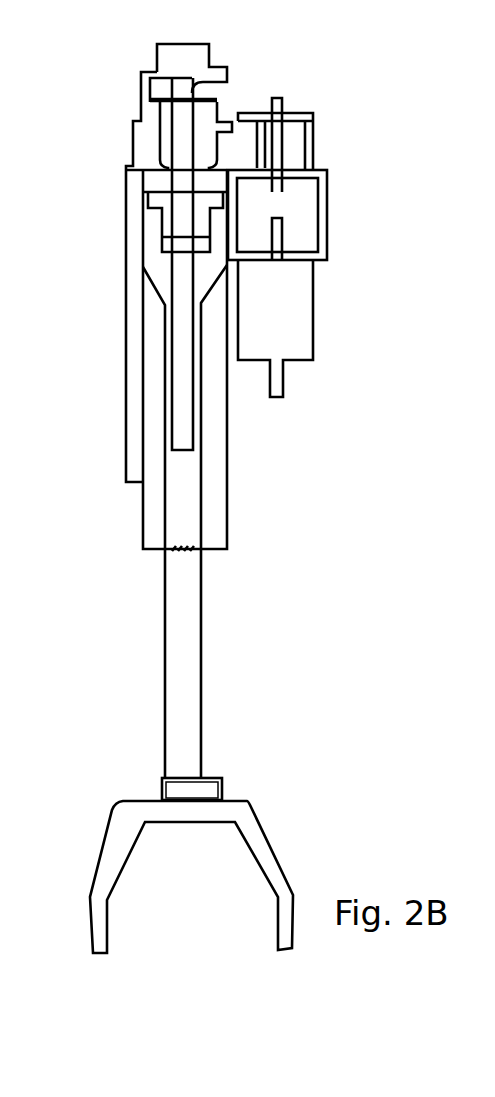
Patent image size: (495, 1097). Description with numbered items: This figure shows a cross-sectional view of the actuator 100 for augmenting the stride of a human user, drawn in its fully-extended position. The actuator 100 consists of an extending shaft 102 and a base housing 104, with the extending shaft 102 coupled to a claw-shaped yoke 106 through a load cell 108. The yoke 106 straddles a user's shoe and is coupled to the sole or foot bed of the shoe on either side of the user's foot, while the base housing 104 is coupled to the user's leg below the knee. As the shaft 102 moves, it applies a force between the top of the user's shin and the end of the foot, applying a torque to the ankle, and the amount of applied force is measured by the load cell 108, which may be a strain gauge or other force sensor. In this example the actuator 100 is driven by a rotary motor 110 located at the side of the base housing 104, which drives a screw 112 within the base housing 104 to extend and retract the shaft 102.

The actuator 100 is at (366, 127).
The extending shaft 102 is at (165, 636).
The base housing 104 is at (143, 341).
The claw-shaped yoke 106 is at (272, 848).
The load cell 108 is at (222, 795).
The rotary motor 110 is at (288, 316).
The screw 112 is at (172, 297).